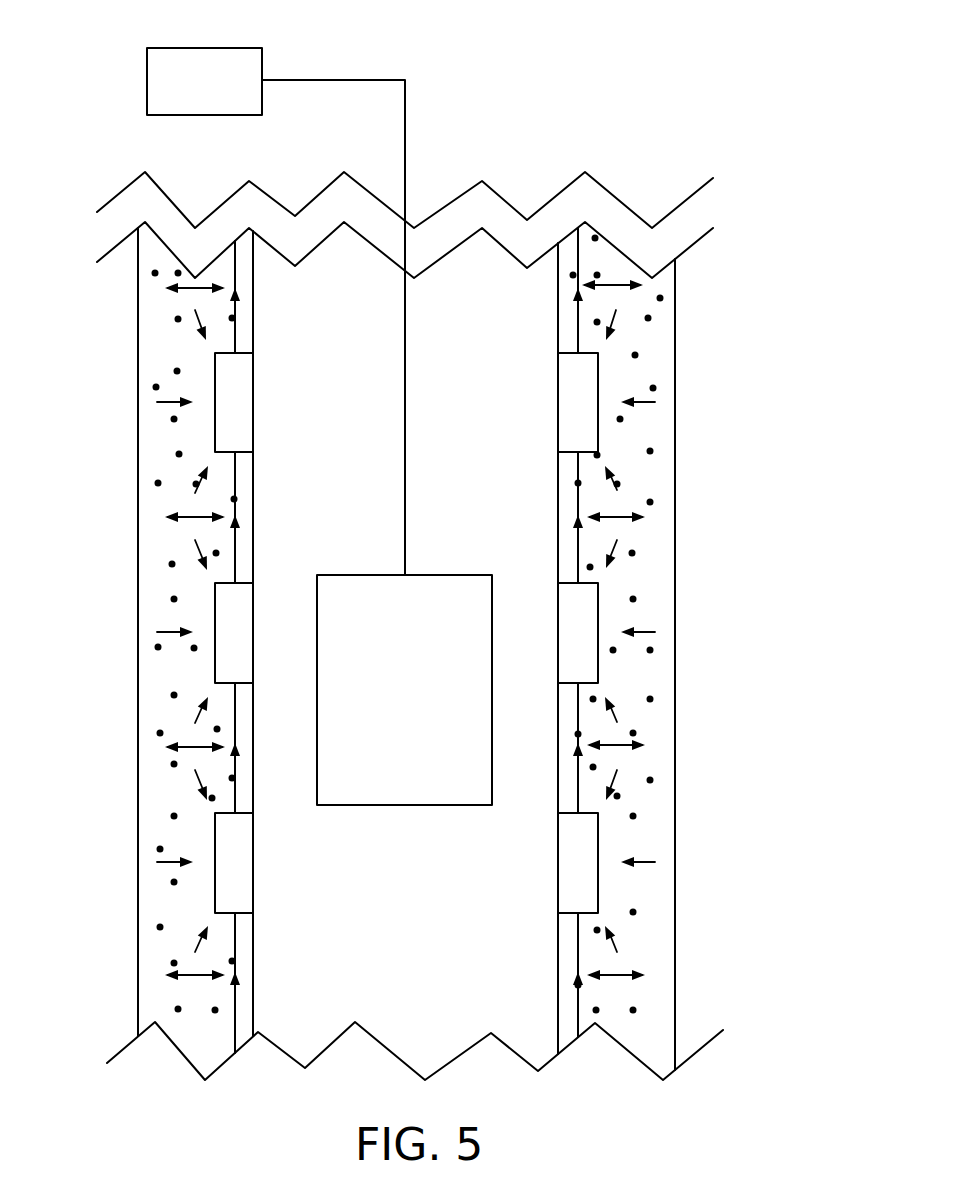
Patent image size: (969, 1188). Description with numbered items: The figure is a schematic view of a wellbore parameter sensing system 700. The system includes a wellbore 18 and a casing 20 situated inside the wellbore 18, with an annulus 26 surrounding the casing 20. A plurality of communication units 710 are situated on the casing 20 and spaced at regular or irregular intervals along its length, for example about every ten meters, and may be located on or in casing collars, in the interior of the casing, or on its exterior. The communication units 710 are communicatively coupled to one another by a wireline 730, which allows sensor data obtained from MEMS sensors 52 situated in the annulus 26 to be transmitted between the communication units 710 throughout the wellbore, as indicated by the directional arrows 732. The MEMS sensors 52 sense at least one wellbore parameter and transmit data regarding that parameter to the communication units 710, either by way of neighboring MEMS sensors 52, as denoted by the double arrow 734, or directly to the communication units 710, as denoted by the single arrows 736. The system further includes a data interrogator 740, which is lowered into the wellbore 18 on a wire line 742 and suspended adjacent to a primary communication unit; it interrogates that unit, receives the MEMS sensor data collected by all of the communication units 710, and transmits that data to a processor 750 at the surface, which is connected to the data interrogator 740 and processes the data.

The wellbore parameter sensing system 700 is at (560, 36).
The wellbore 18 is at (675, 565).
The casing 20 is at (560, 540).
The annulus 26 is at (655, 430).
The MEMS sensors 52 is at (175, 320).
The communication units 710 is at (215, 422).
The wireline 730 is at (235, 1030).
The directional arrows 732 is at (235, 540).
The double arrow 734 is at (620, 750).
The single arrows 736 is at (194, 714).
The data interrogator 740 is at (404, 690).
The wire line 742 is at (405, 493).
The processor 750 is at (204, 81).